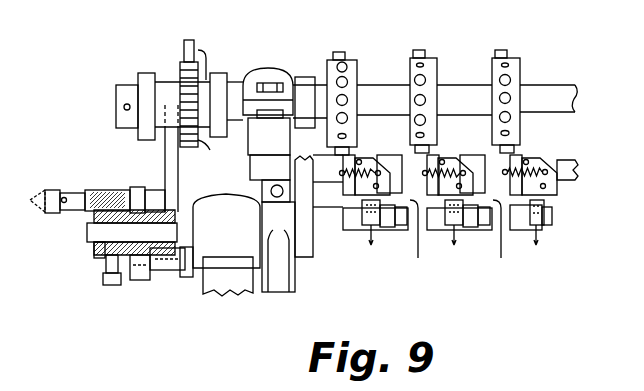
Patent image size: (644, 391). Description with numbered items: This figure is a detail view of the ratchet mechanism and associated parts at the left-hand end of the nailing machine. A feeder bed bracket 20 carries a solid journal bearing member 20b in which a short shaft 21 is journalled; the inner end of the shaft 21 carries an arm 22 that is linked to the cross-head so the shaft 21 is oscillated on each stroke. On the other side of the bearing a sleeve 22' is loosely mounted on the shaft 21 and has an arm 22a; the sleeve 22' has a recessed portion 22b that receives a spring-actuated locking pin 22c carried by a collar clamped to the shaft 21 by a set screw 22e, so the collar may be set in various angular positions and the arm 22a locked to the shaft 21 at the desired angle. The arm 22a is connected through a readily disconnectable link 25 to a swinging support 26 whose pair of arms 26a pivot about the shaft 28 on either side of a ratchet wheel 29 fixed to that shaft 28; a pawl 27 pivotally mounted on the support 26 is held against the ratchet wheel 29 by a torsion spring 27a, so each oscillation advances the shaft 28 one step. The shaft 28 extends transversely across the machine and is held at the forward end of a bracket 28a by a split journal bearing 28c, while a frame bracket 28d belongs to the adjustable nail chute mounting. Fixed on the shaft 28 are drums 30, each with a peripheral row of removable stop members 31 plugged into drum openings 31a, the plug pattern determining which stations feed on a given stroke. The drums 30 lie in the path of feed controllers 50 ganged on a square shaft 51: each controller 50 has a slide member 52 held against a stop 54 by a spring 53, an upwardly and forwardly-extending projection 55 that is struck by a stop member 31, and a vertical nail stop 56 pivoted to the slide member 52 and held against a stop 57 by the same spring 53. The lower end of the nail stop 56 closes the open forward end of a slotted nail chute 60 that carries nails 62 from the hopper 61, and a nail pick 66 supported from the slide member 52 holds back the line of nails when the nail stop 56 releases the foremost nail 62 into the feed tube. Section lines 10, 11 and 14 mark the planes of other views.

The section line 10- 10 is at (173, 39).
The section line 11- 11 is at (240, 73).
The section line 14- 14 is at (388, 75).
The feeder bed bracket 20 is at (238, 288).
The journal bearing member 20b is at (248, 233).
The short shaft 21 is at (88, 235).
The arm 22 is at (302, 223).
The sleeve 22' is at (154, 192).
The arm 22a is at (94, 252).
The recessed portion 22b is at (148, 194).
The spring-actuated locking pin 22c is at (135, 190).
The set screw 22e is at (107, 280).
The link 25 is at (179, 190).
The swinging support 26 is at (149, 72).
The arms 26a is at (140, 78).
The pawl 27 is at (188, 40).
The torsion spring 27a is at (200, 70).
The shaft 28 is at (555, 88).
The bracket 28a is at (252, 152).
The split journal bearing 28c is at (290, 68).
The frame bracket 28d is at (298, 286).
The ratchet wheel 29 is at (213, 152).
The drum 30 is at (350, 88).
The stop member 31 is at (350, 46).
The drum openings 31a is at (346, 68).
The feed controller 50 is at (393, 157).
The square shaft 51 is at (576, 164).
The slide member 52 is at (476, 155).
The spring 53 is at (348, 196).
The stop 54 is at (345, 178).
The projection 55 is at (357, 158).
The nail stop 56 is at (371, 240).
The stop 57 is at (525, 160).
The nail chute 60 is at (520, 232).
The hopper 61 is at (504, 182).
The nails 62 is at (462, 240).
The nail pick 66 is at (466, 242).